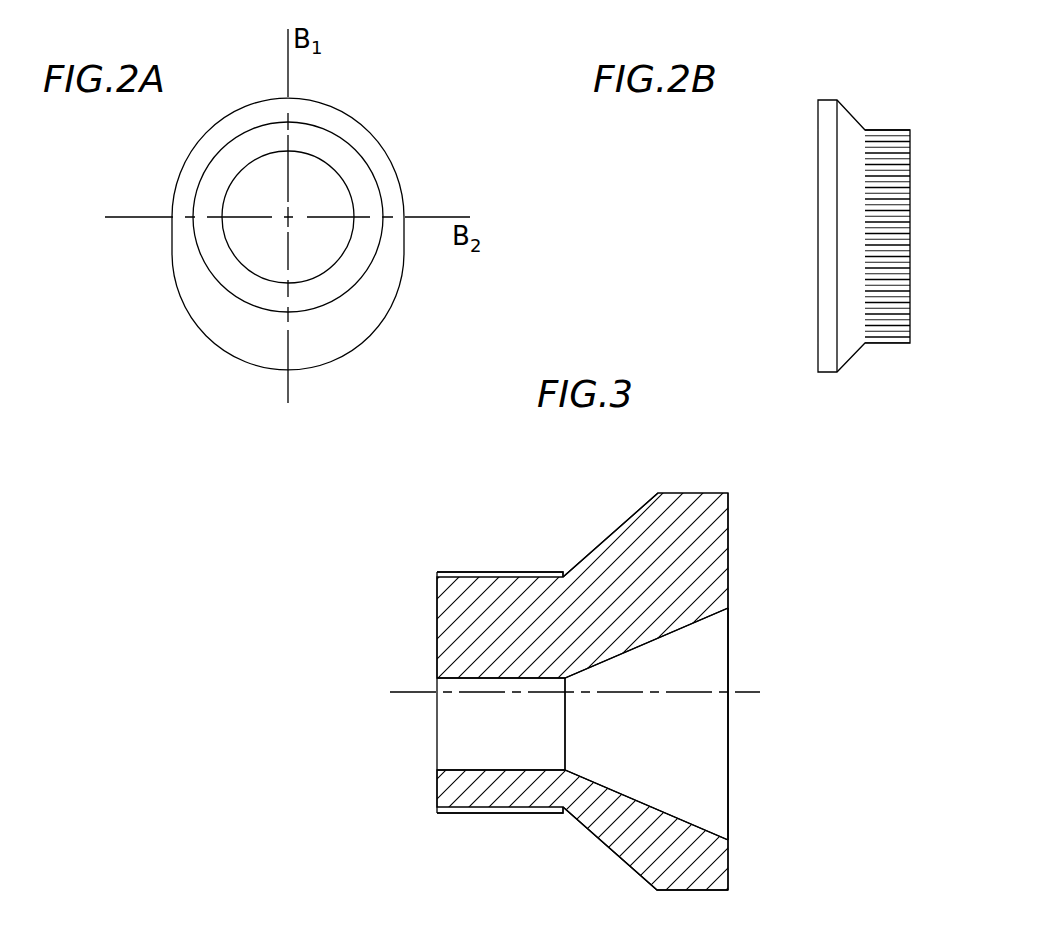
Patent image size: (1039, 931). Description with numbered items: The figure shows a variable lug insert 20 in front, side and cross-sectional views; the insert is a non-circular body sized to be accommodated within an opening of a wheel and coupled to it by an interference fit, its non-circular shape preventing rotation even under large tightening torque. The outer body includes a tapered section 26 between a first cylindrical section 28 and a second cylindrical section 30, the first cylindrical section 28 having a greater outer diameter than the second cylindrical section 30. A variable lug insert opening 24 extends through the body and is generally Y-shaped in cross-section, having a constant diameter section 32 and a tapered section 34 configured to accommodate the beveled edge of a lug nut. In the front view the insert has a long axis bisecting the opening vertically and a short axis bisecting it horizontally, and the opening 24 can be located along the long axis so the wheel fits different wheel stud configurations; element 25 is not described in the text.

In FIG. 2A, the variable lug insert 20 is at (146, 241).
In FIG. 2B, the variable lug insert 20 is at (900, 366).
In FIG. 3, the variable lug insert 20 is at (362, 503).
In FIG. 2A, the variable lug insert opening 24 is at (317, 250).
In FIG. 3, the variable lug insert opening 24 is at (688, 758).
In FIG. 3, the lower tapered wall 25 is at (685, 823).
In FIG. 3, the tapered section 26 is at (625, 543).
In FIG. 3, the first cylindrical section 28 is at (703, 493).
In FIG. 2B, the second cylindrical section 30 is at (886, 128).
In FIG. 3, the second cylindrical section 30 is at (492, 570).
In FIG. 3, the constant diameter section 32 is at (478, 768).
In FIG. 3, the tapered section 34 is at (687, 626).